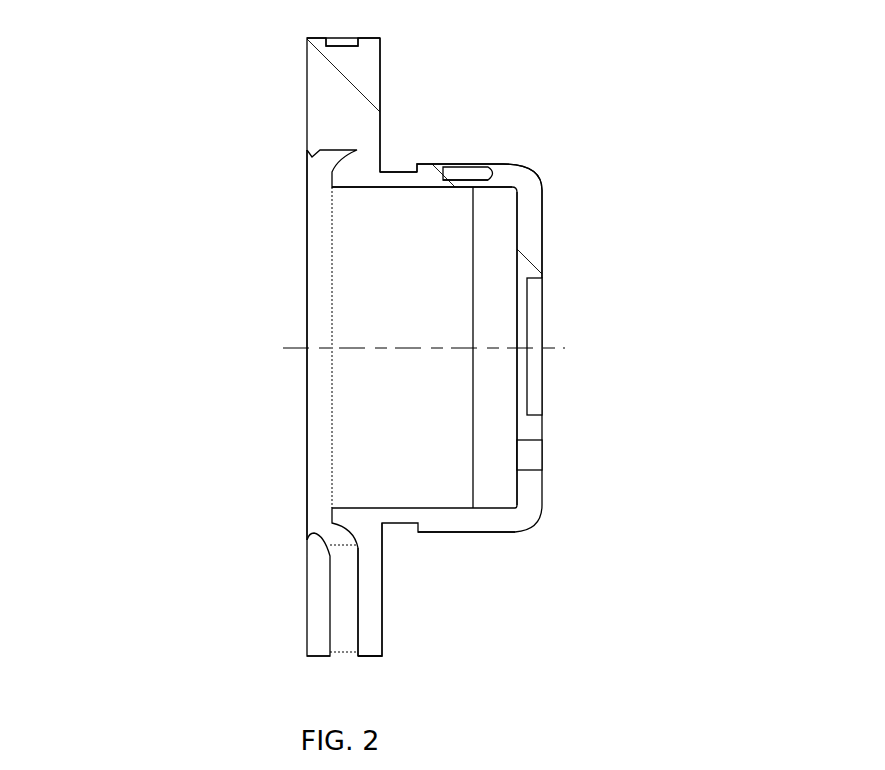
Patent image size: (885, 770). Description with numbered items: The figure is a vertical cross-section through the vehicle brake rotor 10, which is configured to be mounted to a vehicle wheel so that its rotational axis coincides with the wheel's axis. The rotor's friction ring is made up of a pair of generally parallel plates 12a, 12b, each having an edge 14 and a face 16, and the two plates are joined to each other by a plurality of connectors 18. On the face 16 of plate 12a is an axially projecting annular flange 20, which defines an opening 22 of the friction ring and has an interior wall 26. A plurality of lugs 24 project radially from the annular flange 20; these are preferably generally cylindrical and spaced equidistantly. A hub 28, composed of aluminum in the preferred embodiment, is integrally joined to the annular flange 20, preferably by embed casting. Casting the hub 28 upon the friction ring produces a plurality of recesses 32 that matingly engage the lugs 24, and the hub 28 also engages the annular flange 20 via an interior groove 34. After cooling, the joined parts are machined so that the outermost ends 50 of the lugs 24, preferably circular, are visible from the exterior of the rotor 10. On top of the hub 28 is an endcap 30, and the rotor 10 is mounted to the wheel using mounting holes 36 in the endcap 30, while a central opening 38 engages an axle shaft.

The vehicle brake rotor 10 is at (232, 101).
The plate 12a is at (382, 608).
The plate 12b is at (298, 608).
The edge 14 is at (307, 655).
The face 16 is at (380, 68).
The connectors 18 is at (345, 56).
The annular flange 20 is at (404, 176).
The opening 22 is at (390, 348).
The lugs 24 is at (433, 165).
The interior wall 26 is at (415, 187).
The hub 28 is at (518, 183).
The endcap 30 is at (527, 260).
The recesses 32 is at (450, 165).
The interior groove 34 is at (475, 183).
The mounting holes 36 is at (532, 447).
The central opening 38 is at (532, 396).
The outermost ends 50 is at (505, 163).